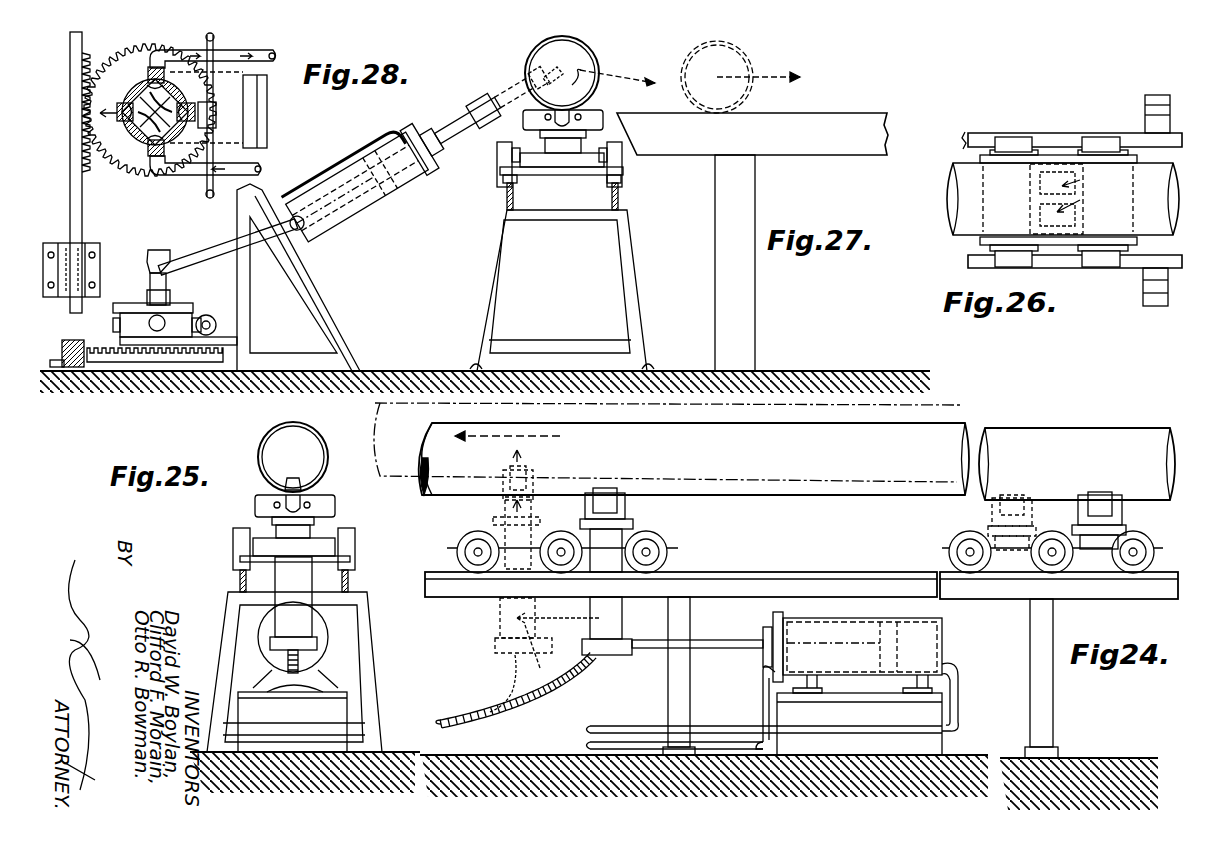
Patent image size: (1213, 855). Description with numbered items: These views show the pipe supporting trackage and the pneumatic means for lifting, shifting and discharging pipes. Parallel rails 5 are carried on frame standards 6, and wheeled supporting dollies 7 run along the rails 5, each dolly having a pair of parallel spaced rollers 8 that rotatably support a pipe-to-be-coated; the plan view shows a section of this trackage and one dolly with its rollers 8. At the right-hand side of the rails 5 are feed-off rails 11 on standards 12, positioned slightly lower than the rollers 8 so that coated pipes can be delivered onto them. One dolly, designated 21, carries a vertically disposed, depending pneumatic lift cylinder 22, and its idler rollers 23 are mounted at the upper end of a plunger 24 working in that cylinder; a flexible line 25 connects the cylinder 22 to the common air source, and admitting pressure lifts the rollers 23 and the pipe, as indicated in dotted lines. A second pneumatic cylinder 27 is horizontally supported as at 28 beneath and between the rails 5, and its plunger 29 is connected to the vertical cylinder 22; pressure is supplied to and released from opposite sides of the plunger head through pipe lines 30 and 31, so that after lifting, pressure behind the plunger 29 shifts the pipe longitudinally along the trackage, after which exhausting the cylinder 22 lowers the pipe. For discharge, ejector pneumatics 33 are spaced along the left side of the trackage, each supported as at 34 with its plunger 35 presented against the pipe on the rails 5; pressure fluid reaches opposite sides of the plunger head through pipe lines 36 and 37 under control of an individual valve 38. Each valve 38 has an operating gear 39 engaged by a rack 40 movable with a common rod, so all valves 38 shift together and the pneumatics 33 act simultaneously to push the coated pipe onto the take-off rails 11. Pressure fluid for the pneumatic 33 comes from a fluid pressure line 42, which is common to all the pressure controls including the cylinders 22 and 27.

In FIG. 27, the rails 5 is at (507, 194).
In FIG. 26, the rails 5 is at (1047, 135).
In FIG. 25, the rails 5 is at (240, 588).
In FIG. 24, the rails 5 is at (1095, 586).
In FIG. 27, the frame standards 6 is at (628, 250).
In FIG. 26, the frame standards 6 is at (1145, 118).
In FIG. 25, the frame standards 6 is at (360, 648).
In FIG. 24, the frame standards 6 is at (690, 665).
In FIG. 27, the wheeled supporting dollies 7 is at (497, 170).
In FIG. 26, the wheeled supporting dollies 7 is at (970, 150).
In FIG. 24, the wheeled supporting dollies 7 is at (945, 538).
In FIG. 27, the rollers 8 is at (564, 85).
In FIG. 26, the rollers 8 is at (1080, 188).
In FIG. 24, the rollers 8 is at (1008, 505).
In FIG. 27, the feed-off rails 11 is at (800, 110).
In FIG. 27, the standards 12 is at (755, 188).
In FIG. 25, the pipe supporting dolly 21 is at (330, 530).
In FIG. 24, the pipe supporting dolly 21 is at (660, 545).
In FIG. 25, the pneumatic lift cylinder 22 is at (293, 597).
In FIG. 24, the pneumatic lift cylinder 22 is at (590, 645).
In FIG. 25, the idler rollers 23 is at (292, 473).
In FIG. 24, the idler rollers 23 is at (603, 490).
In FIG. 24, the plunger 24 is at (503, 508).
In FIG. 25, the flexible line 25 is at (270, 668).
In FIG. 24, the flexible line 25 is at (568, 700).
In FIG. 25, the pneumatic cylinder 27 is at (322, 625).
In FIG. 24, the pneumatic cylinder 27 is at (935, 633).
In FIG. 25, the support 28 is at (320, 672).
In FIG. 24, the support 28 is at (930, 707).
In FIG. 24, the plunger 29 is at (735, 640).
In FIG. 24, the pipe line 30 is at (958, 678).
In FIG. 24, the pipe line 31 is at (745, 703).
In FIG. 28, the ejector pneumatics 33 is at (417, 148).
In FIG. 28, the support 34 is at (268, 106).
In FIG. 28, the plunger 35 is at (491, 106).
In FIG. 27, the plunger 35 is at (540, 70).
In FIG. 28, the pipe line 36 is at (190, 178).
In FIG. 28, the pipe line 37 is at (270, 53).
In FIG. 28, the valve 38 is at (122, 130).
In FIG. 28, the operating gear 39 is at (140, 175).
In FIG. 28, the rack 40 is at (82, 62).
In FIG. 28, the fluid pressure line 42 is at (215, 125).